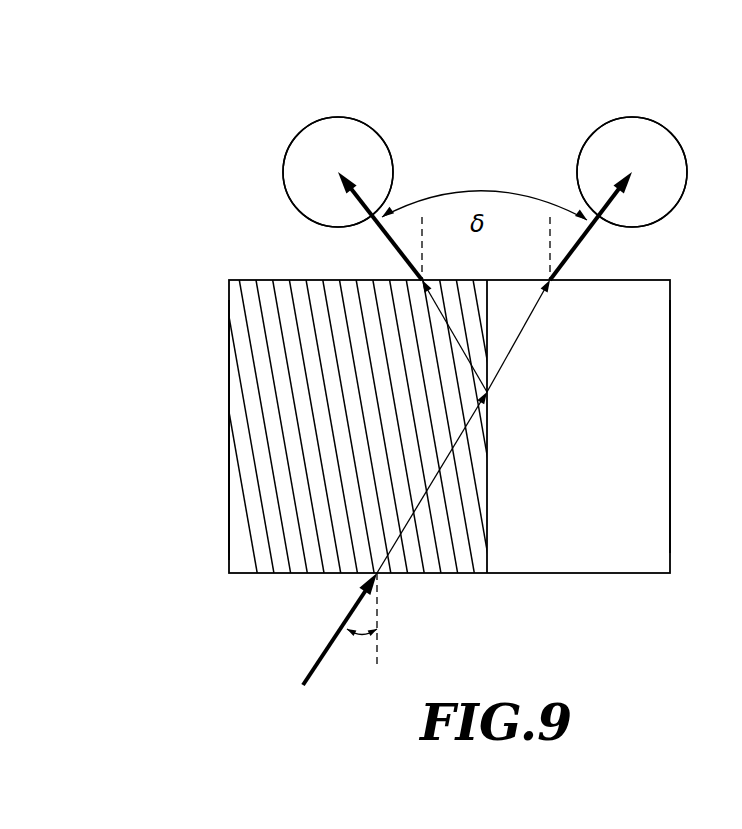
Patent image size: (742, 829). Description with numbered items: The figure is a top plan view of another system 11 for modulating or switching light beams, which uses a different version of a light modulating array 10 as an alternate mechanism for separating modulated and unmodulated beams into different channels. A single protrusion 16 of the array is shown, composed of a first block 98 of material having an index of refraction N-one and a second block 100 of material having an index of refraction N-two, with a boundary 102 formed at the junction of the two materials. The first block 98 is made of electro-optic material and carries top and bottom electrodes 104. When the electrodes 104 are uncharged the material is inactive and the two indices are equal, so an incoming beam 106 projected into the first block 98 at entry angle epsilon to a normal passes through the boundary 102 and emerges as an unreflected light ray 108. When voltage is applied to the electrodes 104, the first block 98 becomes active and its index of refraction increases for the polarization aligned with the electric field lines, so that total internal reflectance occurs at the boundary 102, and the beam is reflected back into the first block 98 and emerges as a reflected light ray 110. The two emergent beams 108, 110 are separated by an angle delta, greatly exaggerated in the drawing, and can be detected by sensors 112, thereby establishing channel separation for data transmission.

The light modulating array 10 is at (215, 341).
The system for modulating or switching light beams 11 is at (208, 183).
The protrusion 16 is at (232, 492).
The first block 98 is at (300, 335).
The second block 100 is at (577, 490).
The boundary 102 is at (494, 492).
The electrodes 104 is at (267, 427).
The incoming beam 106 is at (342, 625).
The unreflected light ray 108 is at (593, 212).
The reflected light ray 110 is at (390, 213).
The sensors 112 is at (593, 173).